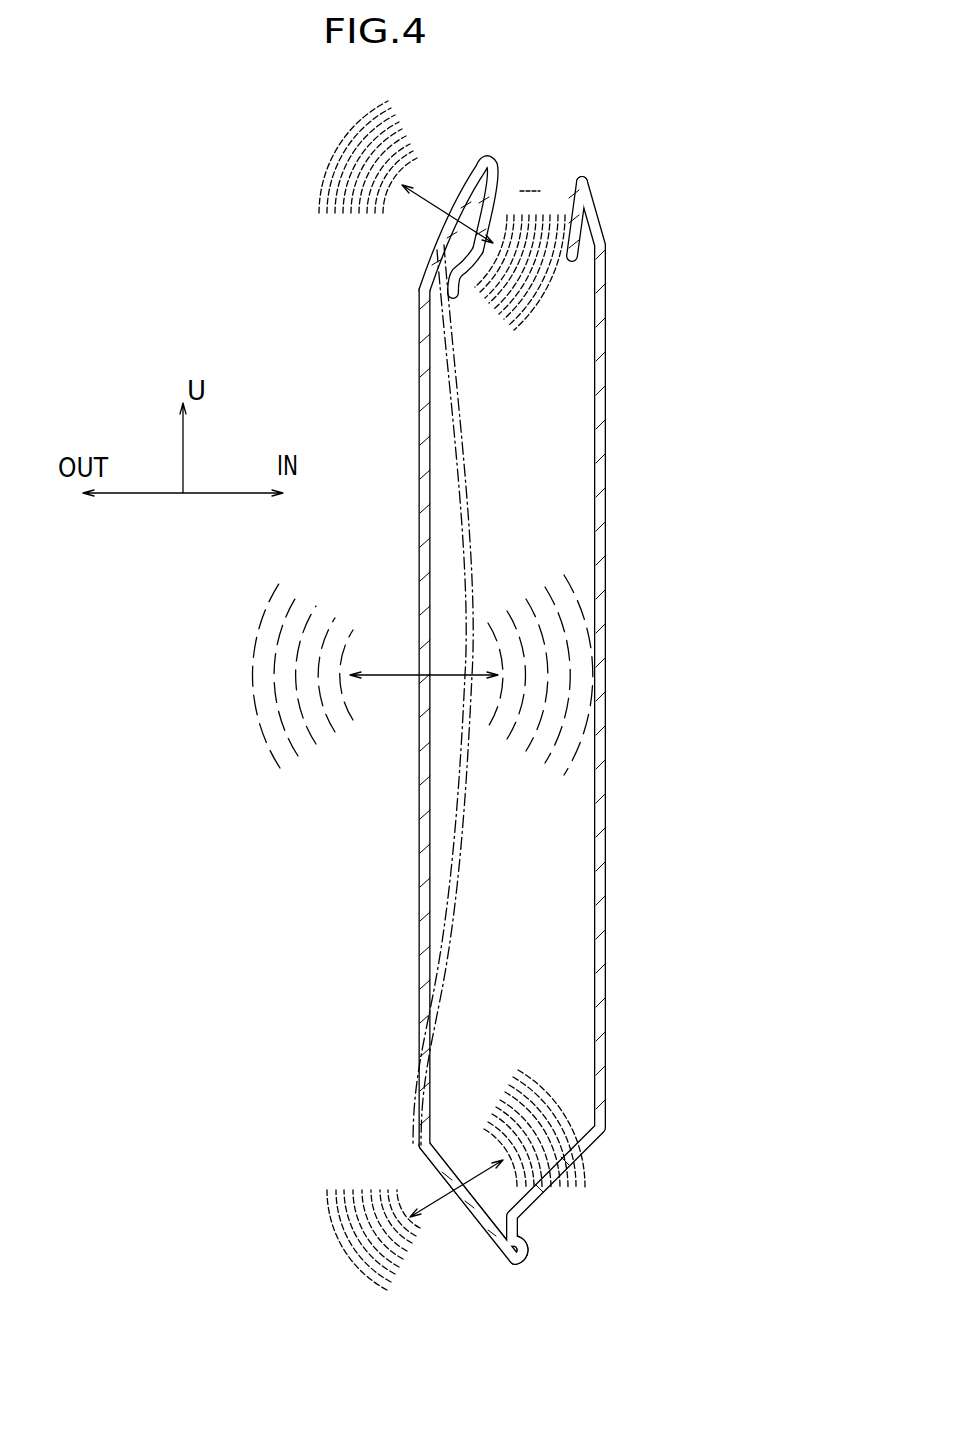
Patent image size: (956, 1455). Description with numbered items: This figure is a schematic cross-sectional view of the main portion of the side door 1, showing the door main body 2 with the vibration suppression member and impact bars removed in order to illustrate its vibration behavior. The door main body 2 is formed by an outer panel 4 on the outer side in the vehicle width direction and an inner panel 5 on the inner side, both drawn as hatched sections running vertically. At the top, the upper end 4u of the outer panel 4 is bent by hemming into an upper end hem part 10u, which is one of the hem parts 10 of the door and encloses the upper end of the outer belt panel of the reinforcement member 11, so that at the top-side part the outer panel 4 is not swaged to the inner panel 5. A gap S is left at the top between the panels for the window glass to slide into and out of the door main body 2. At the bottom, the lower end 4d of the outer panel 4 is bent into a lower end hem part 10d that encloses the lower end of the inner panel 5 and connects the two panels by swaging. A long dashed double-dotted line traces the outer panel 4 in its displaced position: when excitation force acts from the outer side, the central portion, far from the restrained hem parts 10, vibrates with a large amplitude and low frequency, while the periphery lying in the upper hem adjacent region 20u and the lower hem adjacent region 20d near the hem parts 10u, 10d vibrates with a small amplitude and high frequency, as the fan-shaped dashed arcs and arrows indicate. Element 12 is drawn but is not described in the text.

The side door 1 is at (554, 681).
The door main body 2 is at (404, 650).
The outer panel 4 is at (413, 500).
The upper end of the outer panel 4u is at (463, 121).
The lower end of the outer panel 4d is at (510, 1291).
The inner panel 5 is at (608, 358).
The hem part 10 is at (474, 1202).
The upper end hem part 10u is at (495, 172).
The lower end hem part 10d is at (535, 1250).
The reinforcement member 11 is at (468, 273).
The holding tab 12 is at (566, 177).
The upper hem adjacent region 20u is at (381, 240).
The lower hem adjacent region 20d is at (457, 1248).
The gap S is at (530, 178).